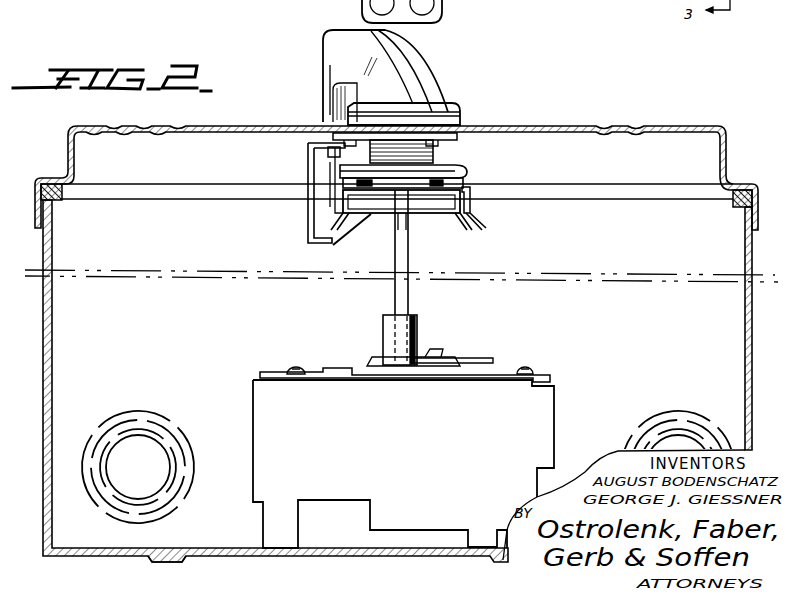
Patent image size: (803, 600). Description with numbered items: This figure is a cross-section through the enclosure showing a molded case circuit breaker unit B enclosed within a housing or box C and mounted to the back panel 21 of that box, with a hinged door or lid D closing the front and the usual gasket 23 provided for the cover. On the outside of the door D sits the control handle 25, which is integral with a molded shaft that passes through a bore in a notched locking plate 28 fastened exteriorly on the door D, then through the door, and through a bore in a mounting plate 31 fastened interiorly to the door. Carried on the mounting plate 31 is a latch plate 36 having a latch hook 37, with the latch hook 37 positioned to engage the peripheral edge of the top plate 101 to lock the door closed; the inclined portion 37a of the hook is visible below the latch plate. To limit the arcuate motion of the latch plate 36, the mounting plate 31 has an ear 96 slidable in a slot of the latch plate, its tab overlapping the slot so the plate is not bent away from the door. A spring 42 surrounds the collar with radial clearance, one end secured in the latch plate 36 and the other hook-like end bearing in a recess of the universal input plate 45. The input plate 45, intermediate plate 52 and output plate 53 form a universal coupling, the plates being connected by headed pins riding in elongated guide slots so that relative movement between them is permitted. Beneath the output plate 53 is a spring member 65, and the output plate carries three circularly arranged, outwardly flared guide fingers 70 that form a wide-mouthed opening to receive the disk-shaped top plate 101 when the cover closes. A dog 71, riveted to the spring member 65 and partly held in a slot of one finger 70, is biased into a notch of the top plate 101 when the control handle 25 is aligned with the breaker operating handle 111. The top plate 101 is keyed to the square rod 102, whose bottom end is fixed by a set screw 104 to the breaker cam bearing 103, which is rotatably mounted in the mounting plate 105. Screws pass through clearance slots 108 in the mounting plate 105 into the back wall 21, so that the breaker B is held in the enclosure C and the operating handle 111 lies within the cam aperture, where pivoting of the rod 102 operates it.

The door D is at (237, 126).
The housing or box C is at (42, 403).
The molded case circuit breaker unit B is at (403, 437).
The back panel 21 is at (156, 549).
The gasket 23 is at (54, 199).
The control handle 25 is at (430, 75).
The notched locking plate 28 is at (461, 125).
The mounting plate 31 is at (459, 138).
The latch plate 36 is at (307, 143).
The latch hook 37 is at (308, 241).
The bracket inclined portion 37a is at (369, 235).
The spring 42 is at (436, 154).
The universal input plate 45 is at (350, 172).
The intermediate plate 52 is at (345, 183).
The output plate 53 is at (402, 198).
The spring member 65 is at (471, 195).
The guide fingers 70 is at (328, 228).
The dog 71 is at (463, 226).
The ear 96 is at (346, 153).
The top plate 101 is at (412, 216).
The square rod 102 is at (410, 251).
The breaker cam bearing 103 is at (417, 330).
The set screw 104 is at (383, 329).
The mounting plate 105 is at (276, 353).
The clearance slots 108 is at (306, 349).
The circuit breaker operating handle 111 is at (437, 353).